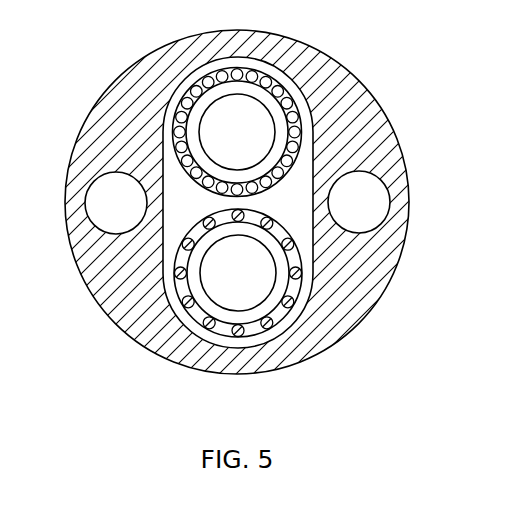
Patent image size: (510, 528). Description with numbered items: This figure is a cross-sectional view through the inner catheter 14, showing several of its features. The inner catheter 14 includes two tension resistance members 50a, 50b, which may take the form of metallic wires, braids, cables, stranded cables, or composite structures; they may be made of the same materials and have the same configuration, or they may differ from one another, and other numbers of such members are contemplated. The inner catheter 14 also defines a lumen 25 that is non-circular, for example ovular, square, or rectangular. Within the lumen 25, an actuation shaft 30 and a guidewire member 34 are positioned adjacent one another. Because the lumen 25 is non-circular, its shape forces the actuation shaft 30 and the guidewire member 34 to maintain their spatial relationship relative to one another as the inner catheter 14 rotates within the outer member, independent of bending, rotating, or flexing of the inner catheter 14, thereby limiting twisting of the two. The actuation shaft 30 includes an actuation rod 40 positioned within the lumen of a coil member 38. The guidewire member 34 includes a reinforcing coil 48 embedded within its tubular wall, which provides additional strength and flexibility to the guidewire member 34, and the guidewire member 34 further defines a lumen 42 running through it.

The inner catheter 14 is at (357, 83).
The lumen 25 is at (178, 234).
The actuation shaft 30 is at (210, 70).
The coil member 38 is at (253, 75).
The actuation rod 40 is at (213, 121).
The guidewire member 34 is at (217, 333).
The reinforcing coil 48 is at (266, 322).
The lumen of the guidewire member 42 is at (268, 279).
The tension resistance member 50a is at (102, 183).
The tension resistance member 50b is at (373, 188).